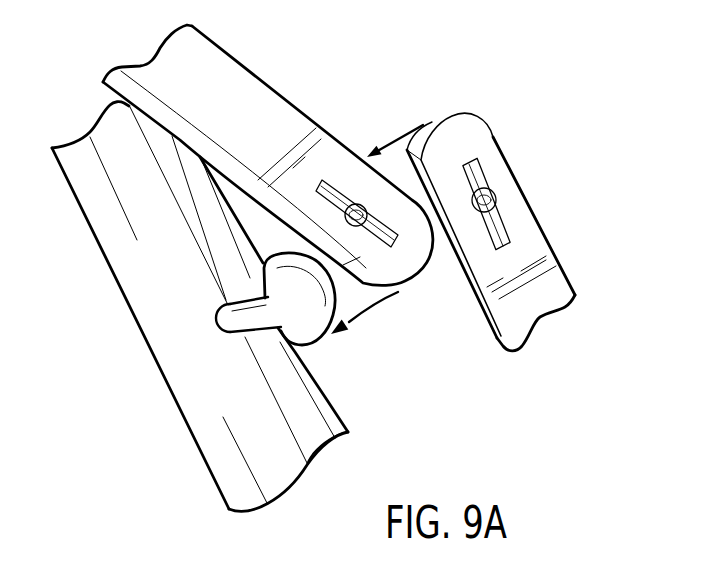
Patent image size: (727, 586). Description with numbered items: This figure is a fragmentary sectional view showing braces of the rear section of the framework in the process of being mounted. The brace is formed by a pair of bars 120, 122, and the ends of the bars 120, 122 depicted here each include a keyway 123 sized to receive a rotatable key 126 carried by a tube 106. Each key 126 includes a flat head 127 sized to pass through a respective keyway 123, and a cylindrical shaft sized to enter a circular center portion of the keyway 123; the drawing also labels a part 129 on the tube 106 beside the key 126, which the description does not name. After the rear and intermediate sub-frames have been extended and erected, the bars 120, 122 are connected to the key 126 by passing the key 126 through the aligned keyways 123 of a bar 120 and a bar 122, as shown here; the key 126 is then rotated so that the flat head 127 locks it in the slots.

The tube 106 is at (164, 352).
The bar 120 is at (541, 248).
The bar 122 is at (267, 102).
The keyway 123 is at (337, 172).
The key 126 is at (320, 344).
The flat head 127 is at (302, 320).
The pin 129 is at (240, 316).